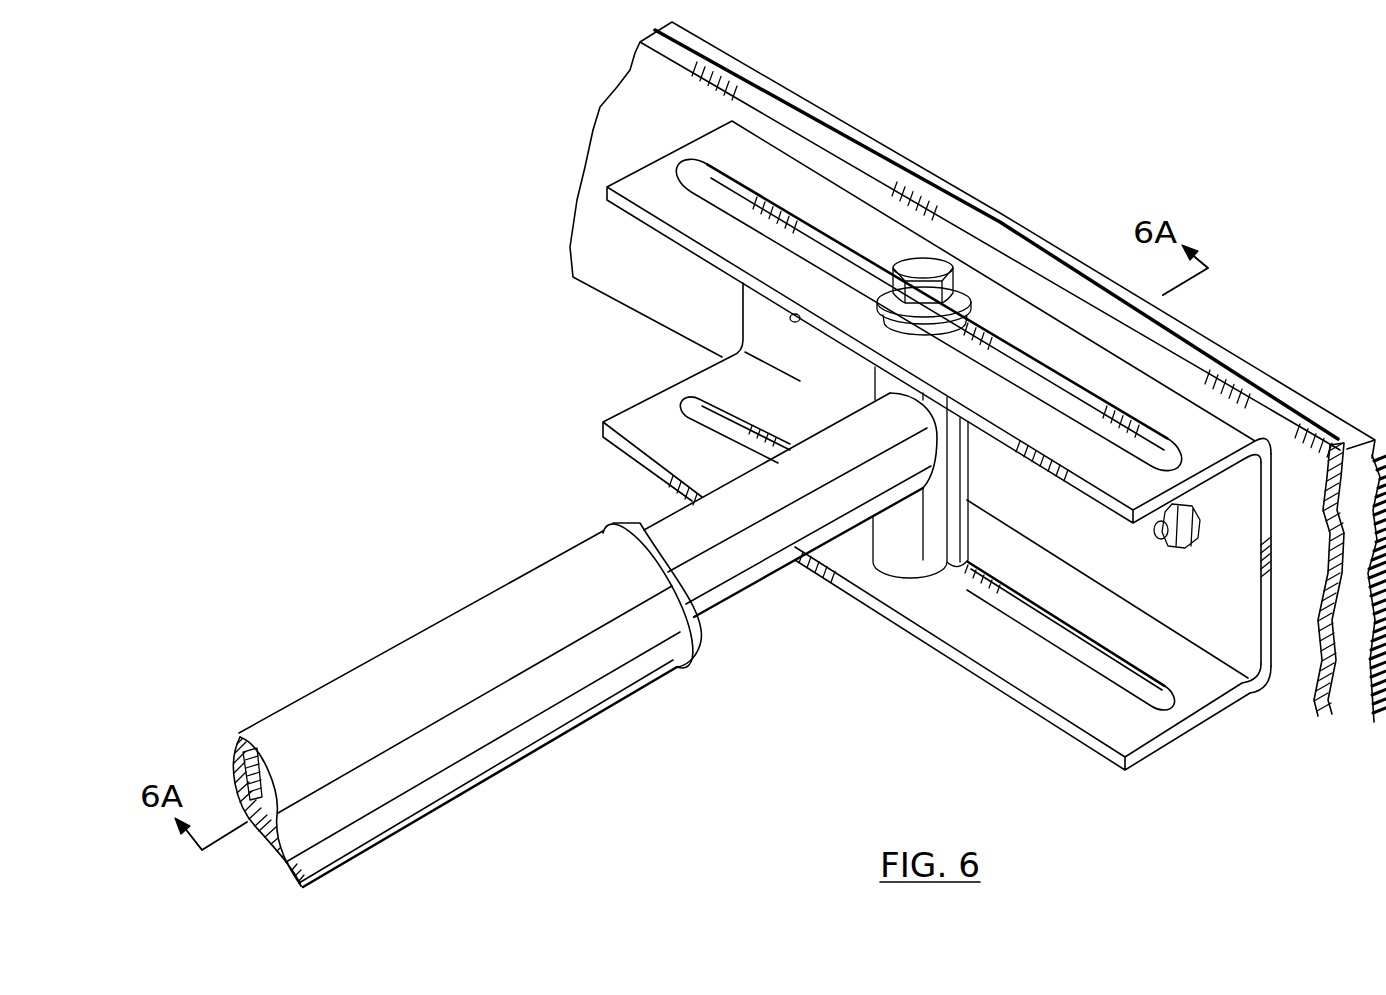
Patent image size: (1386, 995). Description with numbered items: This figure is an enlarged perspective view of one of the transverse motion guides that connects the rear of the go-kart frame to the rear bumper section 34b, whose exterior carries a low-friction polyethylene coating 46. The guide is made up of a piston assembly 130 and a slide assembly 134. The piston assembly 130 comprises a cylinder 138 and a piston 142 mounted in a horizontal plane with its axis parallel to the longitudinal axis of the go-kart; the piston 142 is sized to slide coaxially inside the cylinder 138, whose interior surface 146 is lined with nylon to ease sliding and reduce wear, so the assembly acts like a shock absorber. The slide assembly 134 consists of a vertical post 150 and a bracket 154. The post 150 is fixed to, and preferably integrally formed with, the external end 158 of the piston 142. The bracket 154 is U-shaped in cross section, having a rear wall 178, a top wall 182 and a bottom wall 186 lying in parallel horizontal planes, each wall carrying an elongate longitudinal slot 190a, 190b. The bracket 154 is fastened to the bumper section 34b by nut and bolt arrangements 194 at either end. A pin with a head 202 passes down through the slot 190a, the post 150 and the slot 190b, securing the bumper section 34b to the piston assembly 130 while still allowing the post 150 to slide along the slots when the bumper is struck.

The coating 46 is at (1288, 392).
The rear bumper section 34b is at (1318, 501).
The piston assembly 130 is at (546, 640).
The slide assembly 134 is at (636, 383).
The cylinder 138 is at (227, 769).
The piston 142 is at (790, 510).
The interior surface 146 is at (241, 740).
The post 150 is at (917, 549).
The bracket 154 is at (942, 445).
The external end 158 is at (843, 476).
The rear wall 178 is at (1238, 584).
The top wall 182 is at (1208, 439).
The bottom wall 186 is at (1120, 727).
The elongate slot 190a is at (1052, 393).
The elongate slot 190b is at (1095, 657).
The nut and bolt arrangement 194 is at (793, 318).
The head 202 is at (917, 264).